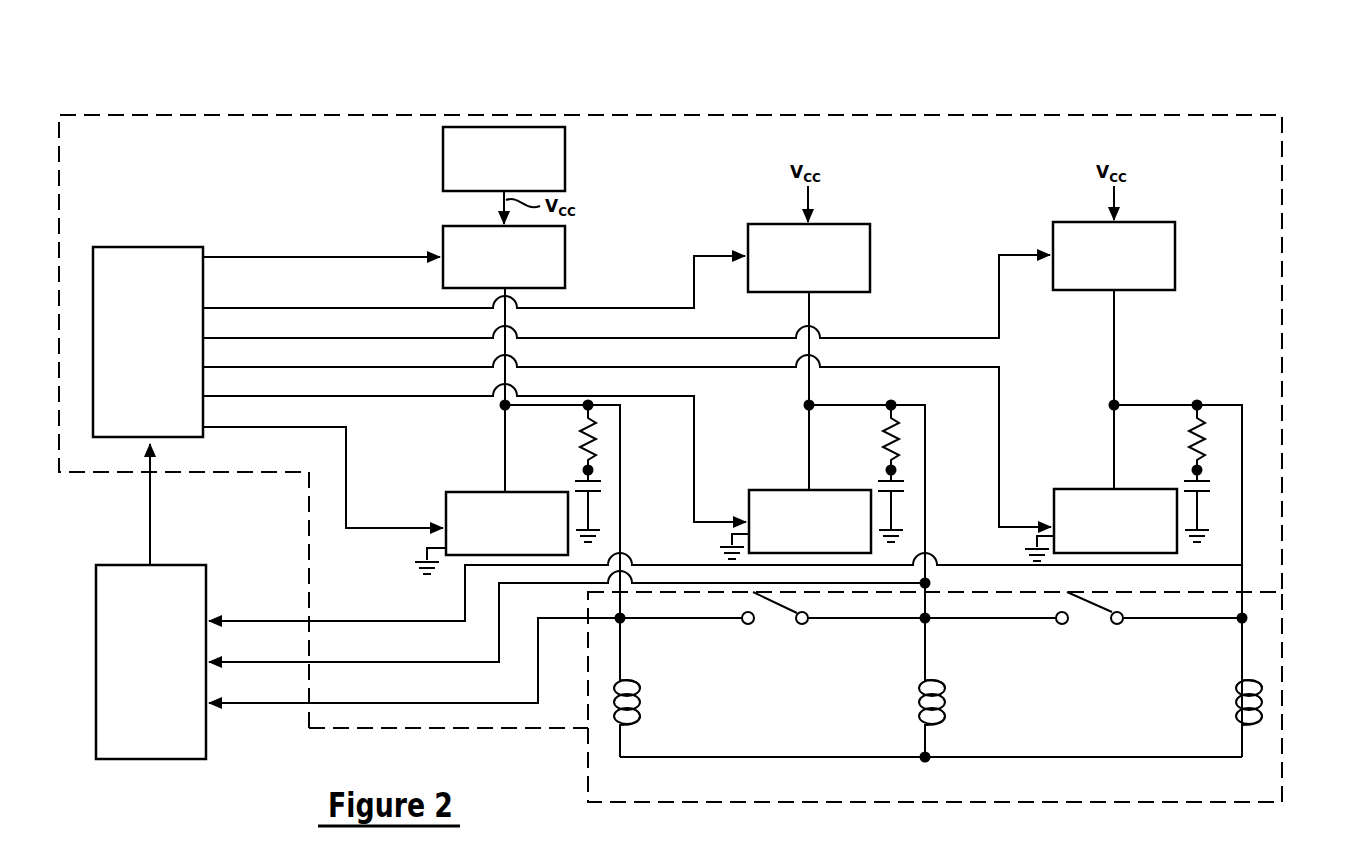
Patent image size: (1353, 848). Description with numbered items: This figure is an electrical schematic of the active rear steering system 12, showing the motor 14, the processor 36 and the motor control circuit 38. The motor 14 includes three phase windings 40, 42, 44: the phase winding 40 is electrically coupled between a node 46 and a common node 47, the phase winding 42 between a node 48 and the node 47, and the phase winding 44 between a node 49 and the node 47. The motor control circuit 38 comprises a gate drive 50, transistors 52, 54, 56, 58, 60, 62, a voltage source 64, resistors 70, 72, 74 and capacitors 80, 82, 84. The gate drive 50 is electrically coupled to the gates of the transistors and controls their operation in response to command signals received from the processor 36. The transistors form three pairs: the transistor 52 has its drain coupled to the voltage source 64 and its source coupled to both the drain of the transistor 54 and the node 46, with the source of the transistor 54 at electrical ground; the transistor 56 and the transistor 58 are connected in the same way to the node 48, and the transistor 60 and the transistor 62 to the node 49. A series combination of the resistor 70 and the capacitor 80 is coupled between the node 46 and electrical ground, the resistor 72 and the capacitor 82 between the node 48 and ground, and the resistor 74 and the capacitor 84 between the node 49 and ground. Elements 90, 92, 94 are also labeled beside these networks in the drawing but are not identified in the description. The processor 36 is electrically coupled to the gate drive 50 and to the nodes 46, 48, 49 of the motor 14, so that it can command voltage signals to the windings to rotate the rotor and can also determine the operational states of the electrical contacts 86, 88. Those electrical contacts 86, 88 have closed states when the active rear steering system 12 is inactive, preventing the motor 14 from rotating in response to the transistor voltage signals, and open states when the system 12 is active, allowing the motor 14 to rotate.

The active rear steering system 12 is at (1110, 82).
The motor 14 is at (1076, 806).
The processor 36 is at (185, 565).
The motor control circuit 38 is at (866, 112).
The phase winding 40 is at (642, 706).
The phase winding 42 is at (947, 705).
The phase winding 44 is at (1264, 704).
The node 46 is at (622, 616).
The node 47 is at (925, 757).
The node 48 is at (927, 616).
The node 49 is at (1244, 616).
The gate drive 50 is at (183, 247).
The transistor 52 is at (565, 258).
The transistor 54 is at (473, 492).
The transistor 56 is at (870, 258).
The transistor 58 is at (777, 490).
The transistor 60 is at (1175, 256).
The transistor 62 is at (1082, 489).
The voltage source 64 is at (565, 160).
The resistor 70 is at (594, 440).
The resistor 72 is at (897, 440).
The resistor 74 is at (1200, 430).
The capacitor 80 is at (594, 492).
The capacitor 82 is at (897, 492).
The capacitor 84 is at (1203, 492).
The electrical contact 86 is at (778, 602).
The electrical contact 88 is at (1090, 614).
The capacitor 90 is at (592, 470).
The capacitor 92 is at (895, 470).
The capacitor 94 is at (1200, 468).